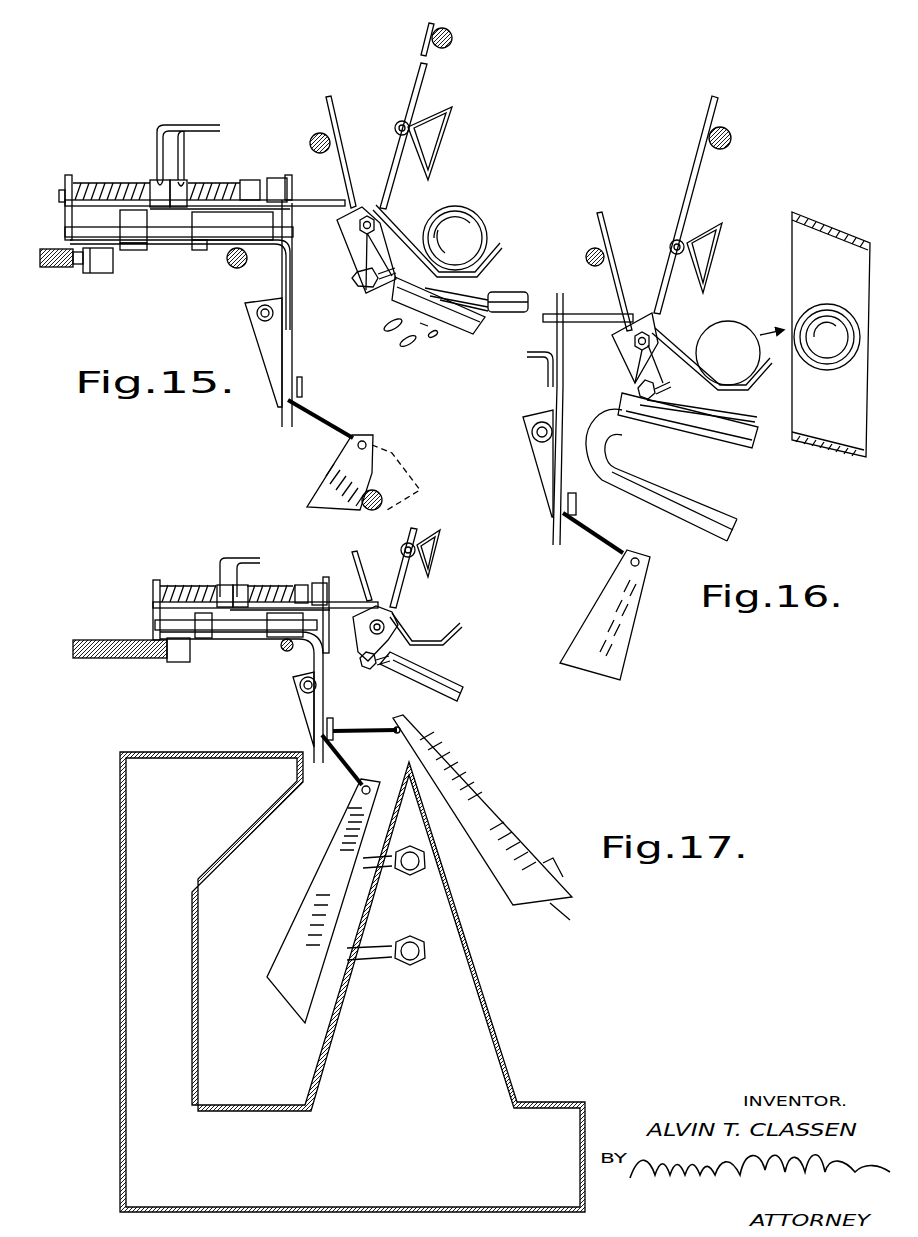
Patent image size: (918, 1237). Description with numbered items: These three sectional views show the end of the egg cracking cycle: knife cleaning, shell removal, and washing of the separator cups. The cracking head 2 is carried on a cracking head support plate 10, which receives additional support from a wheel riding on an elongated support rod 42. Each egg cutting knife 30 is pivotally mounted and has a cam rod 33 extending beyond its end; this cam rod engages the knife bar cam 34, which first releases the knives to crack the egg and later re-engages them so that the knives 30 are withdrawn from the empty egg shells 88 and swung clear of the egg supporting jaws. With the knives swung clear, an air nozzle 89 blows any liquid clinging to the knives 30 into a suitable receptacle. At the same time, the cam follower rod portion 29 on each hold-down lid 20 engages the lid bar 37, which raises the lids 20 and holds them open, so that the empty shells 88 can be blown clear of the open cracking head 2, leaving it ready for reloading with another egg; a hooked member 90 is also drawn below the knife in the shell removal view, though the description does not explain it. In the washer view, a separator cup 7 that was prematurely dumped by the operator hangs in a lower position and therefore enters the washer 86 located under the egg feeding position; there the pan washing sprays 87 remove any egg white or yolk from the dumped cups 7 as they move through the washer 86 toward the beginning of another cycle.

In FIG. 17, the cracking head 2 is at (430, 620).
In FIG. 15, the separator cup 7 is at (373, 445).
In FIG. 16, the separator cup 7 is at (628, 610).
In FIG. 17, the separator cup 7 is at (333, 853).
In FIG. 15, the cracking head support plate 10 is at (282, 312).
In FIG. 16, the cracking head support plate 10 is at (558, 430).
In FIG. 16, the hold-down lid 20 is at (710, 227).
In FIG. 15, the cam follower rod portion 29 is at (427, 68).
In FIG. 16, the cam follower rod portion 29 is at (707, 127).
In FIG. 15, the egg cutting knife 30 is at (468, 323).
In FIG. 16, the egg cutting knife 30 is at (740, 437).
In FIG. 15, the cam rod 33 is at (325, 100).
In FIG. 15, the knife bar cam 34 is at (310, 145).
In FIG. 15, the lid bar 37 is at (455, 33).
In FIG. 16, the lid bar 37 is at (733, 138).
In FIG. 15, the elongated support rod 42 is at (231, 266).
In FIG. 17, the washer 86 is at (318, 1065).
In FIG. 17, the pan washing spray 87 is at (420, 870).
In FIG. 15, the empty egg shell 88 is at (480, 230).
In FIG. 16, the empty egg shell 88 is at (830, 306).
In FIG. 15, the air nozzle 89 is at (513, 295).
In FIG. 16, the hook 90 is at (680, 497).